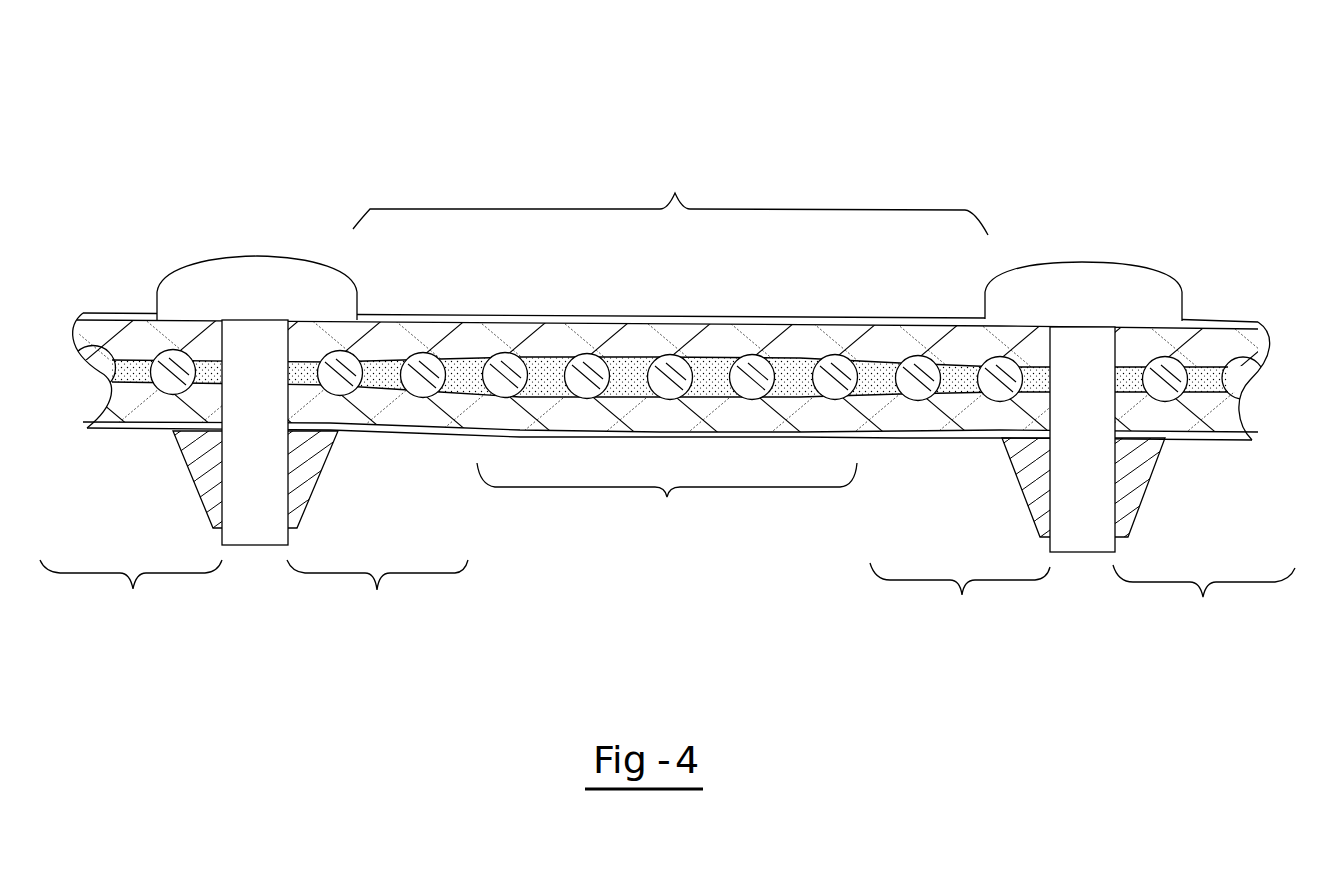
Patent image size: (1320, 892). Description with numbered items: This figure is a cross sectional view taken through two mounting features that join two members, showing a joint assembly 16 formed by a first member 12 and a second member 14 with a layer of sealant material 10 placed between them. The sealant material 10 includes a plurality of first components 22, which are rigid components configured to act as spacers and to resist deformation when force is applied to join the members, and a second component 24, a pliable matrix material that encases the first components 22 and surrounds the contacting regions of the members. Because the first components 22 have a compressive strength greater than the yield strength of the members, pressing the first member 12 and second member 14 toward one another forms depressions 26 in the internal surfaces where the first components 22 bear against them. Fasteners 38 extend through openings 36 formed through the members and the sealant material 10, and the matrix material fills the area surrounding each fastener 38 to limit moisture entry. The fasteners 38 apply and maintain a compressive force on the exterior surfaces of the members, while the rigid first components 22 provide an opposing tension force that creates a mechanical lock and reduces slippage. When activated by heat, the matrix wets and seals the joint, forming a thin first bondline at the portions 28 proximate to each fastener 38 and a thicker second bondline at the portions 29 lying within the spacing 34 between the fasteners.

The sealant material 10 is at (662, 403).
The first member 12 is at (667, 309).
The second member 14 is at (672, 441).
The joint assembly 16 is at (669, 320).
The first component 22 is at (669, 375).
The second component 24 is at (629, 377).
The depressions 26 is at (668, 371).
The portions 28 is at (667, 597).
The portions 29 is at (667, 501).
The spacing 34 is at (670, 196).
The openings 36 is at (669, 409).
The fastener 38 is at (669, 260).